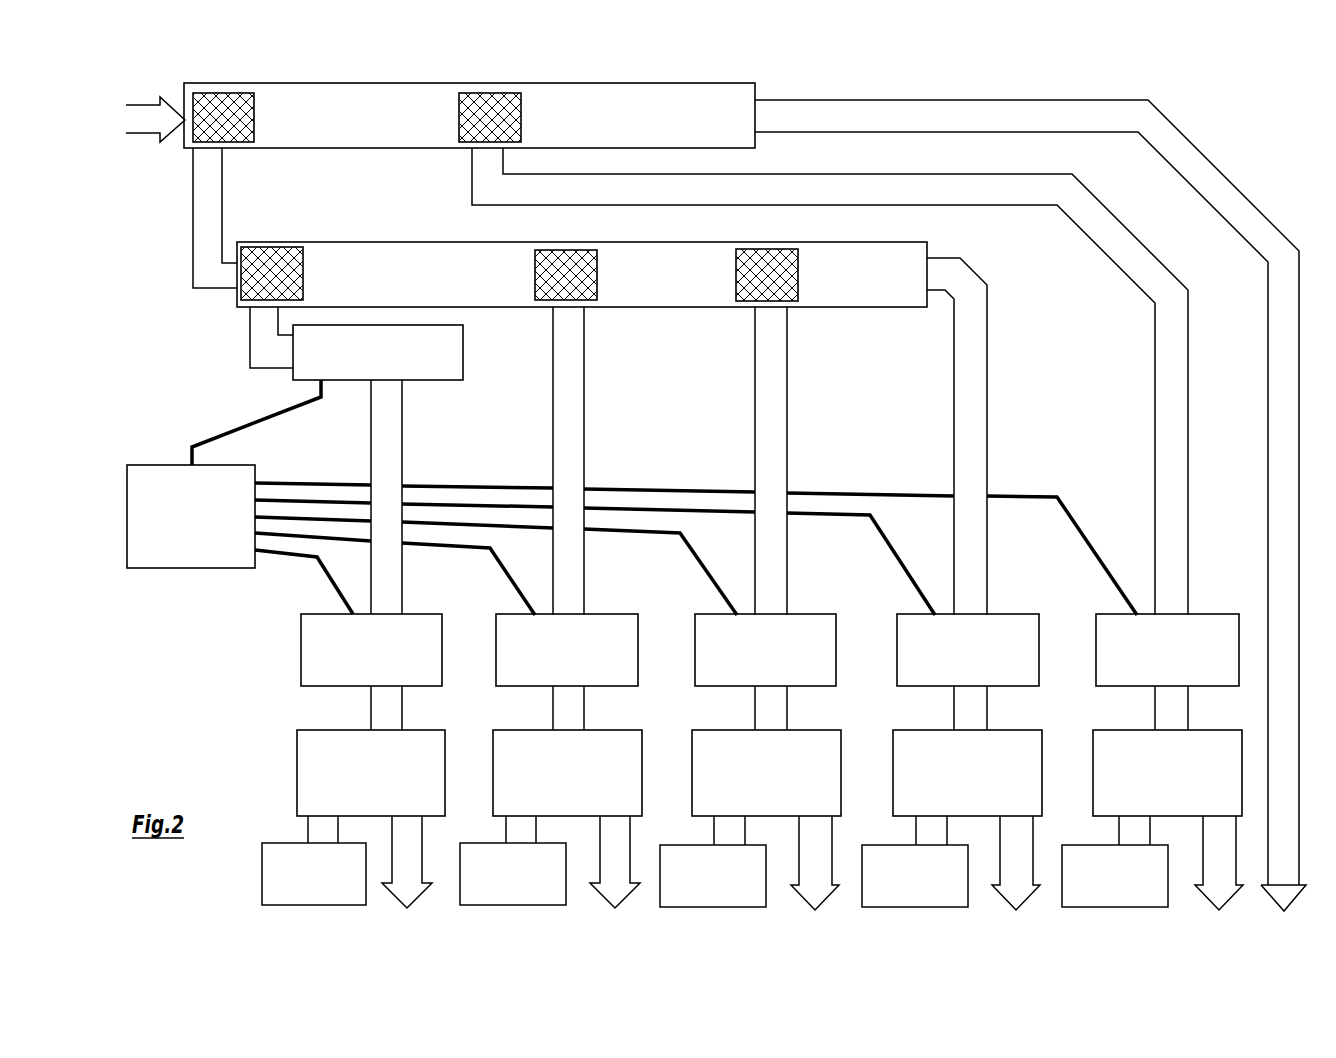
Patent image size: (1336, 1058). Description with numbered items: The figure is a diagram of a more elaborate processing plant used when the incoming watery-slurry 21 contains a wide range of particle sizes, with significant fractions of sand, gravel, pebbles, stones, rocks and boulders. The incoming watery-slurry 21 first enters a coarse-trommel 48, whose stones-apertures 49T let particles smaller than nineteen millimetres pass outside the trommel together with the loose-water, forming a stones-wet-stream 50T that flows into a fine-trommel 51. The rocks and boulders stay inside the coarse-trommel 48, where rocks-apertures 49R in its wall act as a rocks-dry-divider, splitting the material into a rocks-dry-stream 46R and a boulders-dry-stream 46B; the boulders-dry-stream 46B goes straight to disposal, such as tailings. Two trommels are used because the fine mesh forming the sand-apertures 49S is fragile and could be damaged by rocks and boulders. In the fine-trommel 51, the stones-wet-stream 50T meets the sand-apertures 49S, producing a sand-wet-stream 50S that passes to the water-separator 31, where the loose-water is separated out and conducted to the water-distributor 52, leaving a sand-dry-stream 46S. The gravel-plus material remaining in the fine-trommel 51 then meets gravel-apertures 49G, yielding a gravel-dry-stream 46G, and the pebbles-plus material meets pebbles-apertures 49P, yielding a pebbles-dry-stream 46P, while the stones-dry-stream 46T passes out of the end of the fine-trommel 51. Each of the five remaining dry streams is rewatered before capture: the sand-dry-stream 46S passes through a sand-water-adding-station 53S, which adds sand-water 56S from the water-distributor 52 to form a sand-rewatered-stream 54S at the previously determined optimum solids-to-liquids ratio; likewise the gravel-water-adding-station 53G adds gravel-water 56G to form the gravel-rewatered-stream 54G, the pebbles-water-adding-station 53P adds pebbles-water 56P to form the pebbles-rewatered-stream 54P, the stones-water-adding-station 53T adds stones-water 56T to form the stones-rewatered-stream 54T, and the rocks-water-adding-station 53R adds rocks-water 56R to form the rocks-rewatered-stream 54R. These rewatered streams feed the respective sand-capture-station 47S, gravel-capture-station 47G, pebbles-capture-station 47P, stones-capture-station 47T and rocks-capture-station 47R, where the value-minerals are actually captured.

The incoming watery-slurry 21 is at (134, 127).
The coarse-trommel 48 is at (273, 148).
The stones-apertures 49T is at (240, 119).
The rocks-apertures 49R is at (500, 122).
The sand-apertures 49S is at (282, 278).
The gravel-apertures 49G is at (572, 278).
The pebbles-apertures 49P is at (773, 280).
The stones-wet-stream 50T is at (207, 222).
The sand-wet-stream 50S is at (253, 350).
The fine-trommel 51 is at (606, 307).
The water-separator 31 is at (395, 373).
The water-distributor 52 is at (203, 535).
The sand-dry-stream 46S is at (388, 423).
The gravel-dry-stream 46G is at (572, 423).
The pebbles-dry-stream 46P is at (770, 423).
The stones-dry-stream 46T is at (967, 425).
The rocks-dry-stream 46R is at (963, 185).
The boulders-dry-stream 46B is at (965, 108).
The sand-water 56S is at (343, 597).
The gravel-water 56G is at (513, 589).
The pebbles-water 56P is at (710, 580).
The stones-water 56T is at (900, 573).
The rocks-water 56R is at (1093, 555).
The sand-water-adding-station 53S is at (390, 663).
The gravel-water-adding-station 53G is at (587, 663).
The pebbles-water-adding-station 53P is at (783, 663).
The stones-water-adding-station 53T is at (986, 663).
The rocks-water-adding-station 53R is at (1185, 663).
The sand-rewatered-stream 54S is at (382, 715).
The gravel-rewatered-stream 54G is at (575, 714).
The pebbles-rewatered-stream 54P is at (777, 712).
The stones-rewatered-stream 54T is at (975, 712).
The rocks-rewatered-stream 54R is at (1178, 713).
The sand-capture-station 47S is at (390, 790).
The gravel-capture-station 47G is at (588, 790).
The pebbles-capture-station 47P is at (786, 790).
The stones-capture-station 47T is at (987, 790).
The rocks-capture-station 47R is at (1187, 790).